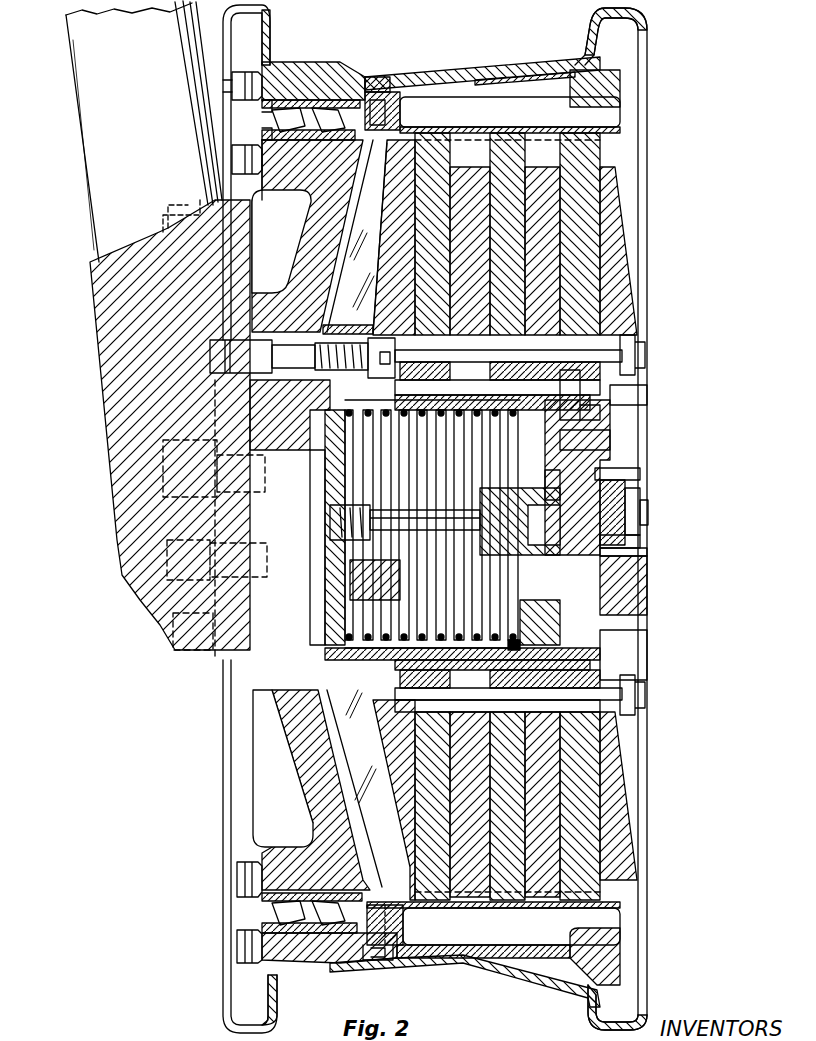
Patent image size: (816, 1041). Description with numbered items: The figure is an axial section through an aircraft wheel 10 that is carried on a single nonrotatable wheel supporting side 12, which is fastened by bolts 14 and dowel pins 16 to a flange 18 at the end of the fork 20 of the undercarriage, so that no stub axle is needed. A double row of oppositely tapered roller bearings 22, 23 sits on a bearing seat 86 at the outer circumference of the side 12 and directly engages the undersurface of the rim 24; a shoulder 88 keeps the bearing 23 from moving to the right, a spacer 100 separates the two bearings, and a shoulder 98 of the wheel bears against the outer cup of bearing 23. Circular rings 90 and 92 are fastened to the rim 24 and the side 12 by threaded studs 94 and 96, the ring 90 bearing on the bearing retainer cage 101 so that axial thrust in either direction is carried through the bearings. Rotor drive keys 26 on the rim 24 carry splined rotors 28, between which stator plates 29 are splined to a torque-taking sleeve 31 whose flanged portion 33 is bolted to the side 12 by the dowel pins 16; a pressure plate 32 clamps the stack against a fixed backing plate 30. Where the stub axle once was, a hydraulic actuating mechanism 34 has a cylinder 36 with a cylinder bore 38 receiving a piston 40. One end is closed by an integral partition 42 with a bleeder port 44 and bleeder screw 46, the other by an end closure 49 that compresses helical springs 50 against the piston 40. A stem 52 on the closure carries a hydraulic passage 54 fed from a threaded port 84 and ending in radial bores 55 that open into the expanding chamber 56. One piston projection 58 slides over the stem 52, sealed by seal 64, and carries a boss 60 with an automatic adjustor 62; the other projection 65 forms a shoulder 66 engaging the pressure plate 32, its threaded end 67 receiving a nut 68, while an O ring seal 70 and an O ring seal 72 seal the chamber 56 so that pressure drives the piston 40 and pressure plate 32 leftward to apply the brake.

The aircraft wheel 10 is at (453, 62).
The wheel supporting side 12 is at (245, 265).
The bolts 14 is at (175, 620).
The dowel pins 16 is at (225, 355).
The flange 18 is at (185, 440).
The fork 20 is at (105, 120).
The tapered roller bearing 22 is at (300, 100).
The tapered roller bearing 23 is at (320, 108).
The rim 24 is at (270, 62).
The rotor drive keys 26 is at (612, 95).
The rotors 28 is at (512, 150).
The stator plates 29 is at (545, 240).
The backing plate 30 is at (420, 140).
The torque-taking sleeve 31 is at (515, 380).
The pressure plate 32 is at (620, 218).
The flanged portion 33 is at (335, 392).
The hydraulic actuating mechanism 34 is at (600, 650).
The cylinder 36 is at (600, 375).
The cylinder bore 38 is at (438, 402).
The piston 40 is at (592, 477).
The partition 42 is at (590, 440).
The bleeder port 44 is at (596, 395).
The bleeder screw 46 is at (590, 420).
The end closure 49 is at (335, 440).
The helical springs 50 is at (365, 466).
The stem 52 is at (380, 540).
The hydraulic passage 54 is at (410, 530).
The radial bores 55 is at (640, 488).
The expanding chamber 56 is at (600, 455).
The projection 58 is at (623, 585).
The boss 60 is at (480, 535).
The automatic adjustor 62 is at (530, 585).
The seal 64 is at (520, 521).
The projection 65 is at (640, 500).
The shoulder 66 is at (640, 552).
The end 67 is at (648, 515).
The nut 68 is at (640, 530).
The O ring seal 70 is at (602, 480).
The O ring seal 72 is at (540, 680).
The threaded port 84 is at (335, 520).
The bearing seat 86 is at (292, 160).
The shoulder 88 is at (388, 110).
The circular ring 90 is at (268, 104).
The circular ring 92 is at (268, 130).
The threaded studs 94 is at (235, 78).
The threaded studs 96 is at (240, 158).
The shoulder 98 is at (385, 77).
The spacer 100 is at (305, 165).
The bearing retainer cage 101 is at (350, 95).